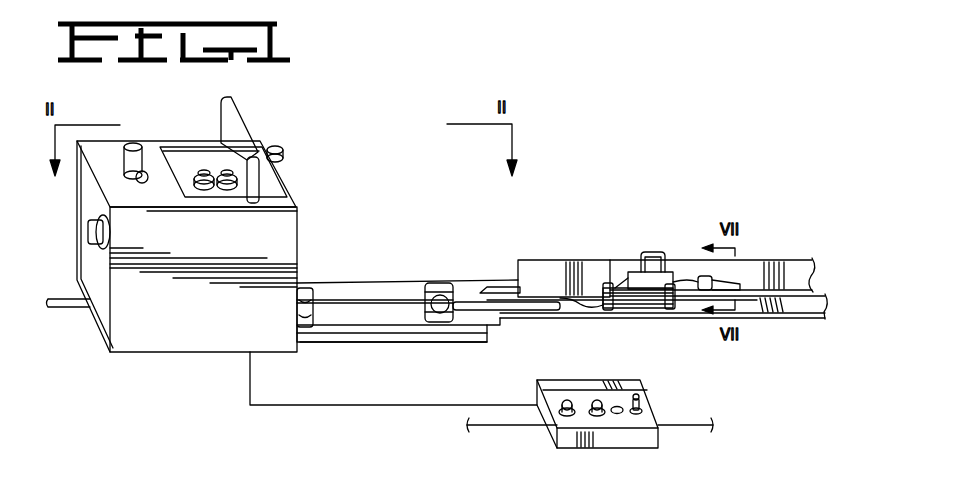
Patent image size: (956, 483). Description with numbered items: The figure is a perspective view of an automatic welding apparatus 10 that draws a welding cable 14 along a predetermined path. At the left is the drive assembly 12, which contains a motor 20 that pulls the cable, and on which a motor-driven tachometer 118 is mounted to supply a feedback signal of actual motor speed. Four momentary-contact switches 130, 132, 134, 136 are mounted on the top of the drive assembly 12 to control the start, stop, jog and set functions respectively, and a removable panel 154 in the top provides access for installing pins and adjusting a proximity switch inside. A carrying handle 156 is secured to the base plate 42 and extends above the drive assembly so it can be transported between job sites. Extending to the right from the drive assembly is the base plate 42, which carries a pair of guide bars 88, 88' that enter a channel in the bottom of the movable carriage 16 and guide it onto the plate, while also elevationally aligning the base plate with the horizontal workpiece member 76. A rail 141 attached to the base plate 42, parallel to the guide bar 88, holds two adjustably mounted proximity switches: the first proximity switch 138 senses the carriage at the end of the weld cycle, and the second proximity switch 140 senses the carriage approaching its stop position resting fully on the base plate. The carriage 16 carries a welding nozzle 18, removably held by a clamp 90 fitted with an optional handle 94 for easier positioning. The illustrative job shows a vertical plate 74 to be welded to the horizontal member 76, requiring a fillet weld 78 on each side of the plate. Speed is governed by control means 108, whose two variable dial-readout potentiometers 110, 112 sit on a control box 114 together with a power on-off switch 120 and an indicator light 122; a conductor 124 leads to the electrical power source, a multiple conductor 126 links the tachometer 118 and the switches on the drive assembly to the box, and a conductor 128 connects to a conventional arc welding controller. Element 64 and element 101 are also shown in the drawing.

The automatic welding apparatus 10 is at (335, 136).
The drive assembly 12 is at (307, 248).
The welding cable 14 is at (350, 296).
The movable carriage 16 is at (656, 309).
The welding nozzle 18 is at (700, 276).
The motor 20 is at (95, 250).
The base plate 42 is at (365, 322).
The cylinder 64 is at (138, 145).
The vertical plate 74 is at (542, 270).
The horizontal member 76 is at (800, 310).
The fillet weld 78 is at (760, 297).
The guide bar 88 is at (639, 324).
The guide bar 88' is at (486, 272).
The clamp 90 is at (668, 275).
The handle 94 is at (644, 252).
The sleeve 101 is at (784, 290).
The means for controlling the speed of the motor 108 is at (538, 442).
The variable dial-readout potentiometer 110 is at (560, 400).
The variable dial-readout potentiometer 112 is at (591, 401).
The control box 114 is at (622, 445).
The motor-driven tachometer 118 is at (92, 228).
The power on-off switch 120 is at (643, 408).
The indicator light 122 is at (618, 402).
The conductor 124 is at (697, 422).
The multiple conductor 126 is at (322, 408).
The conductor 128 is at (497, 428).
The momentary-contact switch 130 is at (229, 168).
The momentary-contact switch 132 is at (204, 168).
The momentary-contact switch 134 is at (229, 195).
The momentary-contact switch 136 is at (207, 195).
The first proximity switch 138 is at (445, 325).
The second proximity switch 140 is at (308, 335).
The rail 141 is at (345, 330).
The removable panel 154 is at (283, 157).
The carrying handle 156 is at (240, 109).